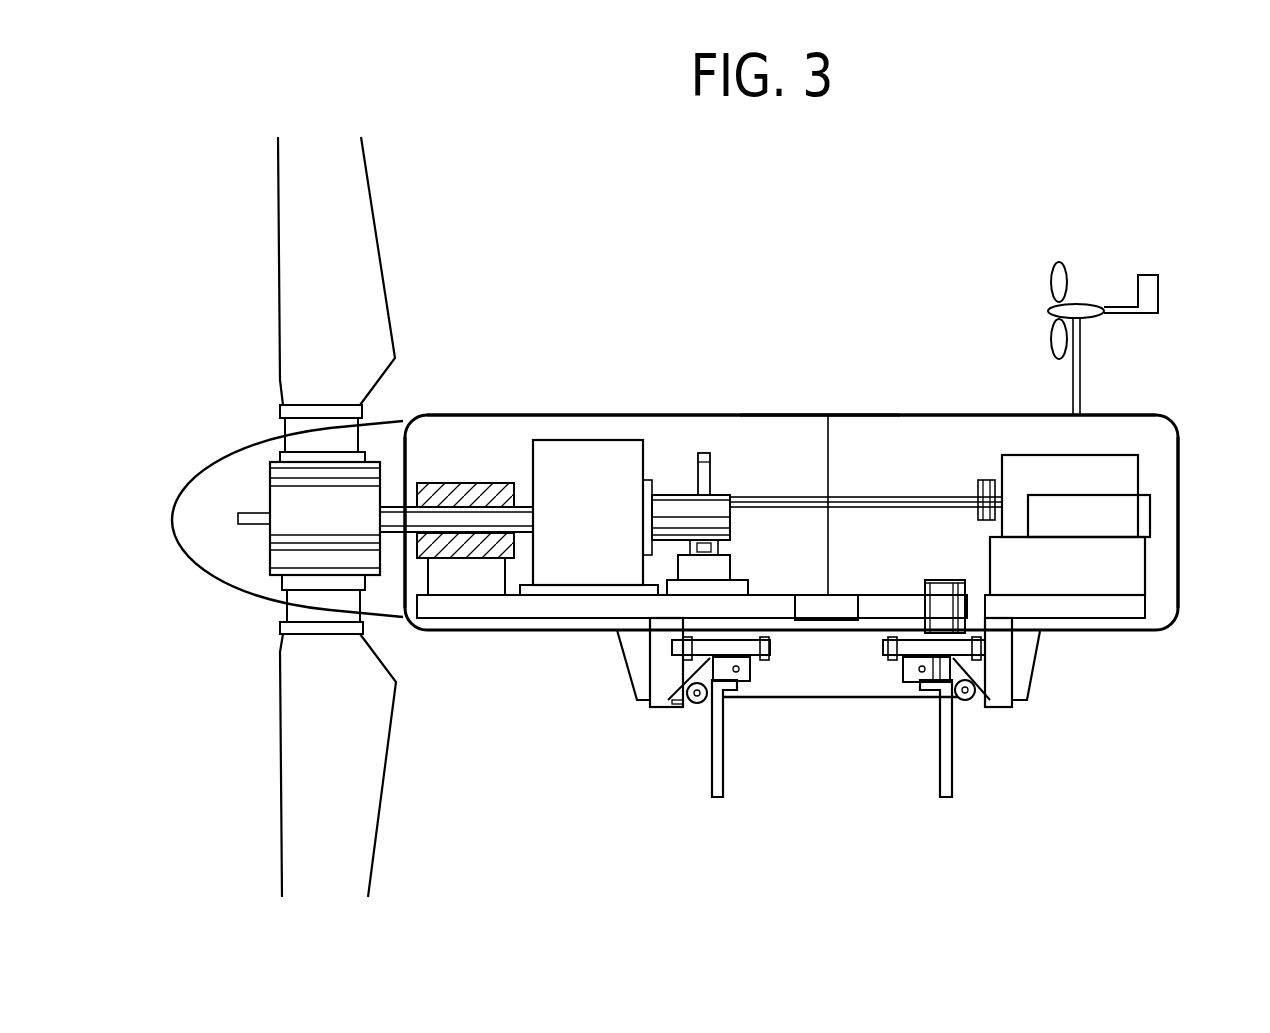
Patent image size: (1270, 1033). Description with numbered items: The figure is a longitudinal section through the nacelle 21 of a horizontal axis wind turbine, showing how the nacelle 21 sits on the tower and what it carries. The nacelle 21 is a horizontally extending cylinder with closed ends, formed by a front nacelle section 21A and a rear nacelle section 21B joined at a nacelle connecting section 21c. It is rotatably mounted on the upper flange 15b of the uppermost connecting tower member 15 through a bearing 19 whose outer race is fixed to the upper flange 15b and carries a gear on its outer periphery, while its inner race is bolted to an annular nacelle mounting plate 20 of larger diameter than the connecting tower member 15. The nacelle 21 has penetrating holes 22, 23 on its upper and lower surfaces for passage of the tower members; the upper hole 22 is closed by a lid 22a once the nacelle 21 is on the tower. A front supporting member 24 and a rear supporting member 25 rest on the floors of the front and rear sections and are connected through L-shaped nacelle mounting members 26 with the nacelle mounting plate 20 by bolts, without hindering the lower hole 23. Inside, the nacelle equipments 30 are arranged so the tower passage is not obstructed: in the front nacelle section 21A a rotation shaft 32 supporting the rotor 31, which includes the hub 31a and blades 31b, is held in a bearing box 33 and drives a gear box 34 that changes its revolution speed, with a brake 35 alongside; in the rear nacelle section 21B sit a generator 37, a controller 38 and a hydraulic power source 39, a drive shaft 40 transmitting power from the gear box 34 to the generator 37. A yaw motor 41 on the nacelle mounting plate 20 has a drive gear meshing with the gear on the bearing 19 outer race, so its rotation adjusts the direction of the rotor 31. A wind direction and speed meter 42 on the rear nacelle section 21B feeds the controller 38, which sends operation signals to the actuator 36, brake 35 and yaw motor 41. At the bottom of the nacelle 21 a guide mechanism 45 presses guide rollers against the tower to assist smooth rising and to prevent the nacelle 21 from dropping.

The connecting tower member 15 is at (864, 738).
The upper flange 15b is at (723, 700).
The bearing 19 is at (740, 683).
The nacelle mounting plate 20 is at (773, 650).
The nacelle 21 is at (791, 417).
The front nacelle section 21A is at (697, 430).
The rear nacelle section 21B is at (915, 430).
The nacelle connecting section 21c is at (830, 445).
The nacelle penetrating hole 22 is at (732, 410).
The lid 22a is at (803, 418).
The nacelle penetrating hole 23 is at (680, 712).
The front supporting member 24 is at (510, 610).
The rear supporting member 25 is at (1107, 612).
The nacelle mounting member 26 is at (658, 680).
The nacelle equipments 30 is at (533, 437).
The rotor 31 is at (286, 517).
The hub 31a is at (283, 560).
The blade 31b is at (290, 263).
The rotation shaft 32 is at (437, 518).
The bearing box 33 is at (490, 483).
The gear box 34 is at (577, 452).
The brake 35 is at (693, 470).
The actuator 36 is at (722, 497).
The generator 37 is at (1113, 455).
The controller 38 is at (1140, 518).
The hydraulic power source 39 is at (1133, 573).
The drive shaft 40 is at (883, 497).
The yaw motor 41 is at (940, 588).
The wind direction & speed meter 42 is at (1088, 302).
The guide mechanism 45 is at (700, 713).